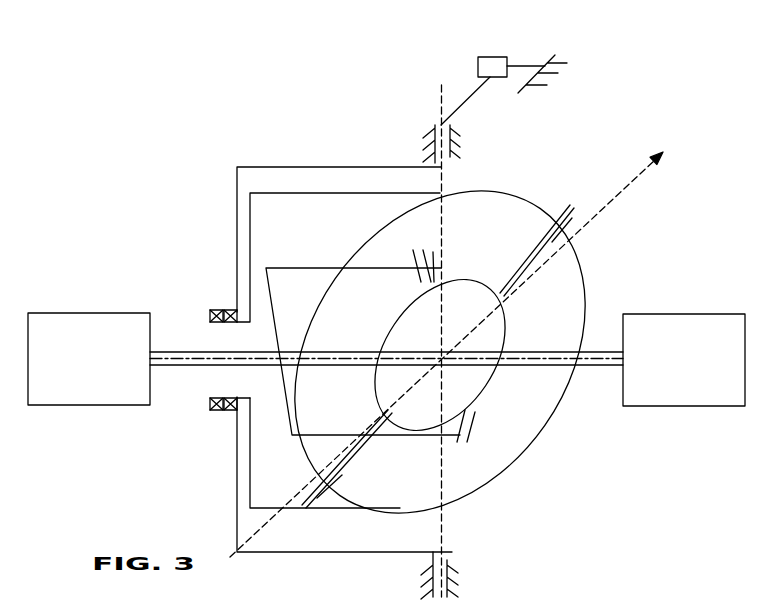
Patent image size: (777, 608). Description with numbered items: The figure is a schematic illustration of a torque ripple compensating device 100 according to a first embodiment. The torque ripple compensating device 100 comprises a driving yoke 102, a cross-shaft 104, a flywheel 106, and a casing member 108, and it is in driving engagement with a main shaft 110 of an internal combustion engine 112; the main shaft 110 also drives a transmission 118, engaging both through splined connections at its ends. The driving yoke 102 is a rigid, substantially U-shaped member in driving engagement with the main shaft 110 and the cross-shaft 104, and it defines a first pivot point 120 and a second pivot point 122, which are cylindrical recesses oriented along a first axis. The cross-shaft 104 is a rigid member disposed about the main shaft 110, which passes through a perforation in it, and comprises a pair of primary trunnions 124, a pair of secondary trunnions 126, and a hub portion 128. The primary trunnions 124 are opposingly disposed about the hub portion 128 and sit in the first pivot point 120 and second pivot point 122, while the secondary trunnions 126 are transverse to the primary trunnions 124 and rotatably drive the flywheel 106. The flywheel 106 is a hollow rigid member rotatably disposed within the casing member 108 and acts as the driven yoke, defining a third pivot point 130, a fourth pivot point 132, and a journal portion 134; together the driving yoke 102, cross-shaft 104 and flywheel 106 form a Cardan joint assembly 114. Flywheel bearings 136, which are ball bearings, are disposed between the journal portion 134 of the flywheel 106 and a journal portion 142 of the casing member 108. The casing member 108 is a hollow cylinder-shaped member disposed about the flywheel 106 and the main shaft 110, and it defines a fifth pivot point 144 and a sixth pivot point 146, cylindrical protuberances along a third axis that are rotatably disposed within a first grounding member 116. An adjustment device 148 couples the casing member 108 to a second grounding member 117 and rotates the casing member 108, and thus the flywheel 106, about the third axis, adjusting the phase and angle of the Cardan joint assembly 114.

The torque ripple compensating device 100 is at (602, 65).
The driving yoke 102 is at (291, 268).
The cross-shaft 104 is at (456, 354).
The flywheel 106 is at (487, 482).
The casing member 108 is at (268, 165).
The main shaft 110 is at (186, 366).
The internal combustion engine 112 is at (85, 313).
The Cardan joint assembly 114 is at (473, 176).
The first grounding member 116 is at (435, 125).
The second grounding member 117 is at (552, 55).
The transmission 118 is at (683, 314).
The first pivot point 120 is at (433, 259).
The second pivot point 122 is at (460, 442).
The primary trunnions 124 is at (423, 283).
The secondary trunnions 126 is at (519, 270).
The hub portion 128 is at (506, 328).
The third pivot point 130 is at (333, 485).
The fourth pivot point 132 is at (568, 225).
The journal portion 134 is at (222, 322).
The flywheel bearings 136 is at (229, 310).
The journal portion 142 is at (222, 410).
The fifth pivot point 144 is at (441, 167).
The sixth pivot point 146 is at (452, 552).
The adjustment device 148 is at (493, 57).